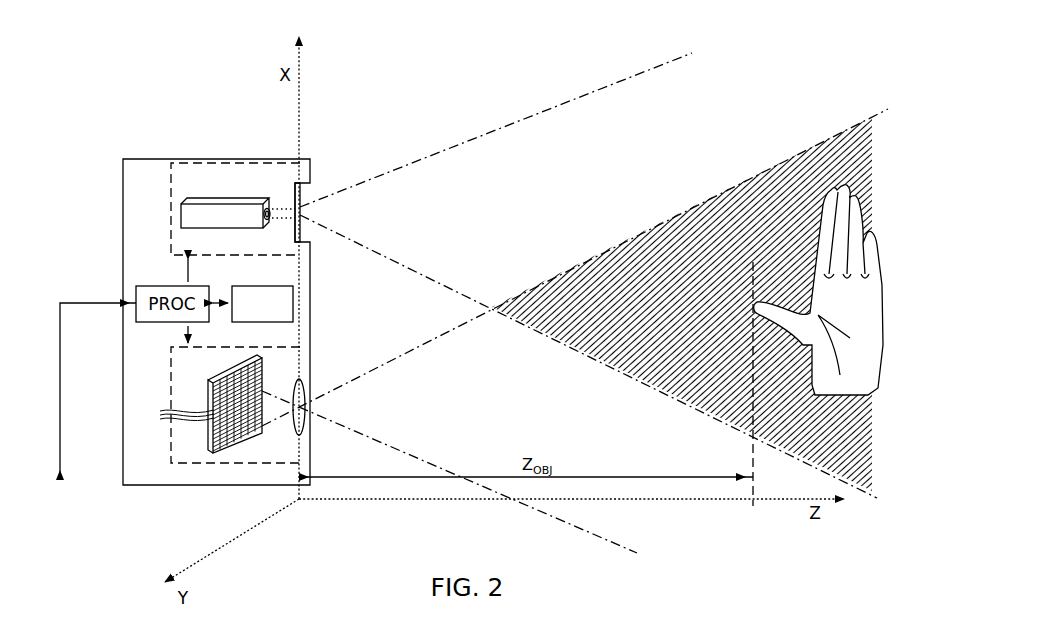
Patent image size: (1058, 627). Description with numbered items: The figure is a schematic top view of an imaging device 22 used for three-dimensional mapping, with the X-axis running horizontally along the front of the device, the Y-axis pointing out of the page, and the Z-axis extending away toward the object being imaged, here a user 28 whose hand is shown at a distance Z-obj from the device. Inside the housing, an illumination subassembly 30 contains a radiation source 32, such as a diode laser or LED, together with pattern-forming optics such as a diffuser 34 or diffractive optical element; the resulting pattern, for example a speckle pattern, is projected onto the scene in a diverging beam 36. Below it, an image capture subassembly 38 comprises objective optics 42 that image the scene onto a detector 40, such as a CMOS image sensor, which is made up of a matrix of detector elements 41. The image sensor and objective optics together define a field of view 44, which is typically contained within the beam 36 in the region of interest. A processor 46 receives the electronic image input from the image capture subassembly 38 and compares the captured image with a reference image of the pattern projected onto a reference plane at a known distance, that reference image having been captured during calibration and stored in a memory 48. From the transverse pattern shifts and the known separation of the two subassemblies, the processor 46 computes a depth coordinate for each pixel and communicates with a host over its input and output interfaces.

The imaging device 22 is at (226, 159).
The user 28 is at (882, 242).
The illumination subassembly 30 is at (171, 211).
The radiation source 32 is at (200, 204).
The diffuser 34 is at (301, 208).
The diverging beam 36 is at (545, 103).
The image capture subassembly 38 is at (171, 385).
The detector 40 is at (210, 378).
The detector elements 41 is at (175, 417).
The objective optics 42 is at (306, 407).
The field of view 44 is at (376, 357).
The processor 46 is at (134, 298).
The memory 48 is at (295, 296).